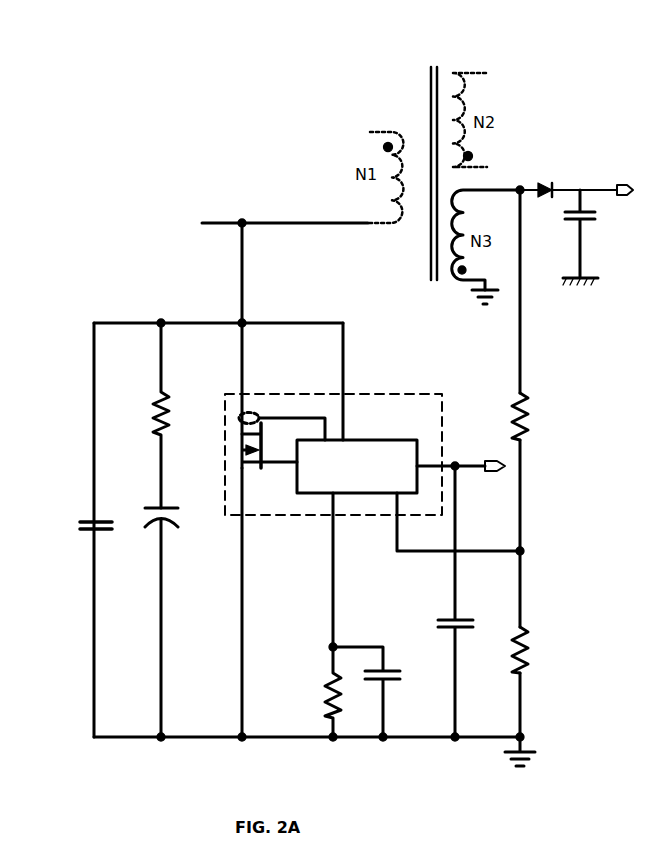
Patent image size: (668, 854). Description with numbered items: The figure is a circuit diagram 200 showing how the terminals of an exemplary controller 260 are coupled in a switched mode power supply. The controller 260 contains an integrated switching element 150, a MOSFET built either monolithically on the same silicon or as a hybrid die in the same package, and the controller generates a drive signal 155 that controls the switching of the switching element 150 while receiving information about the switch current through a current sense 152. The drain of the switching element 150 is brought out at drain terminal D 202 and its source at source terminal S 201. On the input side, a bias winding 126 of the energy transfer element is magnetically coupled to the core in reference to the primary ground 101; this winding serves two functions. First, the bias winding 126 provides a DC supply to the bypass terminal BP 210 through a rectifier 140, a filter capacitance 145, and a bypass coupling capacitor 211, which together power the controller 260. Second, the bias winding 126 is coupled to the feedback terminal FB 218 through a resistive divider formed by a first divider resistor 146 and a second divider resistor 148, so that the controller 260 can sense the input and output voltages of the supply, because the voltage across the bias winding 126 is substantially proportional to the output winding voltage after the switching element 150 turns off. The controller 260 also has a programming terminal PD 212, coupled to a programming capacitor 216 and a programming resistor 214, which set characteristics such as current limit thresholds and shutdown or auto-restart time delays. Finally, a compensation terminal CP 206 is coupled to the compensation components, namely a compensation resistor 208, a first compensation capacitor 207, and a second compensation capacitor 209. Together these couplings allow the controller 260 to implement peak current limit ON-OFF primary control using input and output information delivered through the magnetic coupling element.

The circuit diagram 200 is at (93, 296).
The primary ground 101 is at (467, 308).
The bias winding 126 is at (470, 217).
The rectifier 140 is at (546, 200).
The filter capacitance C1 145 is at (612, 228).
The resistor R1 146 is at (538, 427).
The resistor R2 148 is at (538, 657).
The switching element 150 is at (238, 445).
The current sense 152 is at (275, 413).
The drive signal 155 is at (277, 473).
The source terminal S 201 is at (215, 535).
The drain terminal D 202 is at (233, 367).
The compensation terminal CP 206 is at (352, 363).
The capacitor C1cp 207 is at (150, 477).
The resistor Rcp 208 is at (125, 393).
The capacitor C2cp 209 is at (82, 512).
The bypass terminal BP 210 is at (458, 437).
The capacitor CBP 211 is at (482, 618).
The programming terminal PD 212 is at (322, 543).
The resistor RPD 214 is at (320, 680).
The capacitor CPD 216 is at (405, 683).
The feedback terminal FB 218 is at (382, 542).
The controller 260 is at (390, 390).